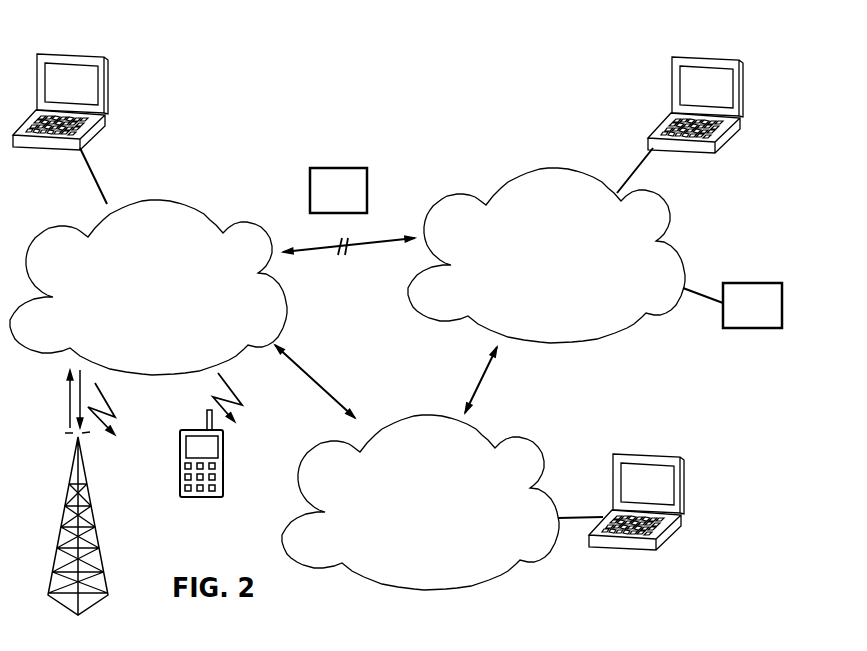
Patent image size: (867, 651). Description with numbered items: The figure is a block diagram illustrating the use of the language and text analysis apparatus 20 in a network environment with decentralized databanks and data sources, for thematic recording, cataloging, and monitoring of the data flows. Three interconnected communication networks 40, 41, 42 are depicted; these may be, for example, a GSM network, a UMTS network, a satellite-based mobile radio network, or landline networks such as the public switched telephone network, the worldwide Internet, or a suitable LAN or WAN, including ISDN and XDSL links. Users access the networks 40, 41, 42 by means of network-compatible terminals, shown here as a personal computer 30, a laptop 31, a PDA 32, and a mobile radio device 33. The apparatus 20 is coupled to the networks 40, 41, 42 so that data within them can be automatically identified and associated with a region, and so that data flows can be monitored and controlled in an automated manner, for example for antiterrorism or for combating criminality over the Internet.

The language and text analysis apparatus 20 is at (349, 203).
The personal computer 30 is at (74, 55).
The laptop 31 is at (672, 83).
The PDA 32 is at (654, 458).
The mobile radio device 33 is at (213, 494).
The communication network 40 is at (152, 300).
The communication network 41 is at (555, 281).
The communication network 42 is at (418, 525).